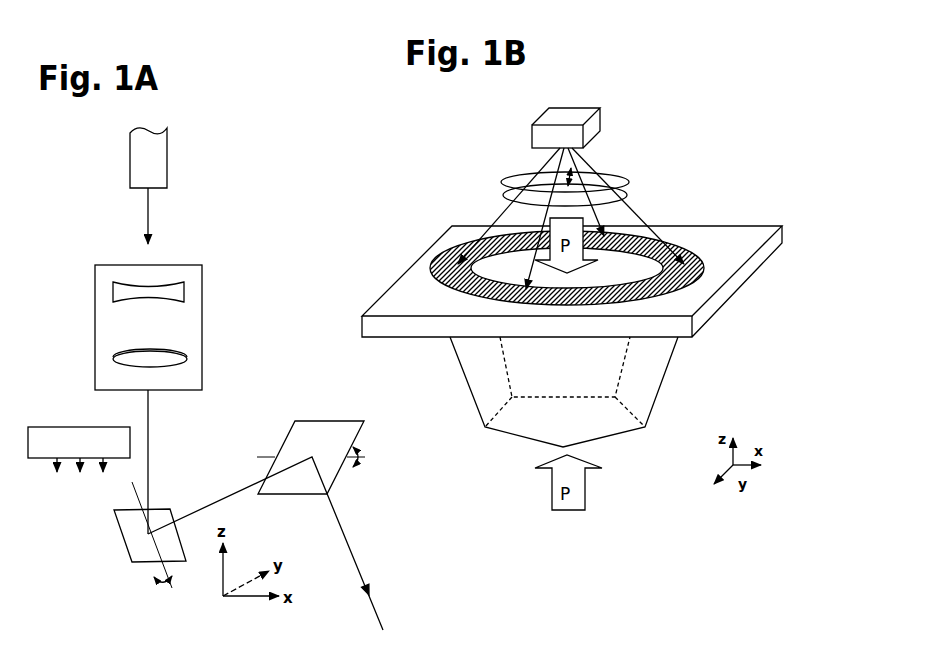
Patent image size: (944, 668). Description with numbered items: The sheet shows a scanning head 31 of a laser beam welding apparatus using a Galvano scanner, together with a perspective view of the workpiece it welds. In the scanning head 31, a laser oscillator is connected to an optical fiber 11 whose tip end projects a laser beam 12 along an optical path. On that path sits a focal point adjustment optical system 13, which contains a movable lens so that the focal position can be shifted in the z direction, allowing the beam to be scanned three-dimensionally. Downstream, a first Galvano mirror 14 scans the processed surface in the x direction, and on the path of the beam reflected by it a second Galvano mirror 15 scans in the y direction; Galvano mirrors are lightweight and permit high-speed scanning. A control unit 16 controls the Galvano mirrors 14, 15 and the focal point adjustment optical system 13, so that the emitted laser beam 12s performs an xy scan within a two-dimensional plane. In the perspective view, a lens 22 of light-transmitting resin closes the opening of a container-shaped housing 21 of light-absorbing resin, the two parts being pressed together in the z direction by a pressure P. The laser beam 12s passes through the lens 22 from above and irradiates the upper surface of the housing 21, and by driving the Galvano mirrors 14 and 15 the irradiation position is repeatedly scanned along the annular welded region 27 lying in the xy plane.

In FIG. 1A, the optical fiber 11 is at (168, 157).
In FIG. 1A, the laser beam 12 is at (149, 212).
In FIG. 1A, the emitted laser beam 12s is at (346, 547).
In FIG. 1B, the emitted laser beam 12s is at (592, 153).
In FIG. 1A, the focal point adjustment optical system 13 is at (203, 282).
In FIG. 1A, the first Galvano mirror 14 is at (163, 499).
In FIG. 1A, the second Galvano mirror 15 is at (302, 419).
In FIG. 1A, the control unit 16 is at (64, 427).
In FIG. 1A, the scanning head 31 is at (240, 239).
In FIG. 1B, the scanning head 31 is at (521, 133).
In FIG. 1B, the housing 21 is at (656, 378).
In FIG. 1B, the lens 22 is at (699, 317).
In FIG. 1B, the welded region 27 is at (460, 238).